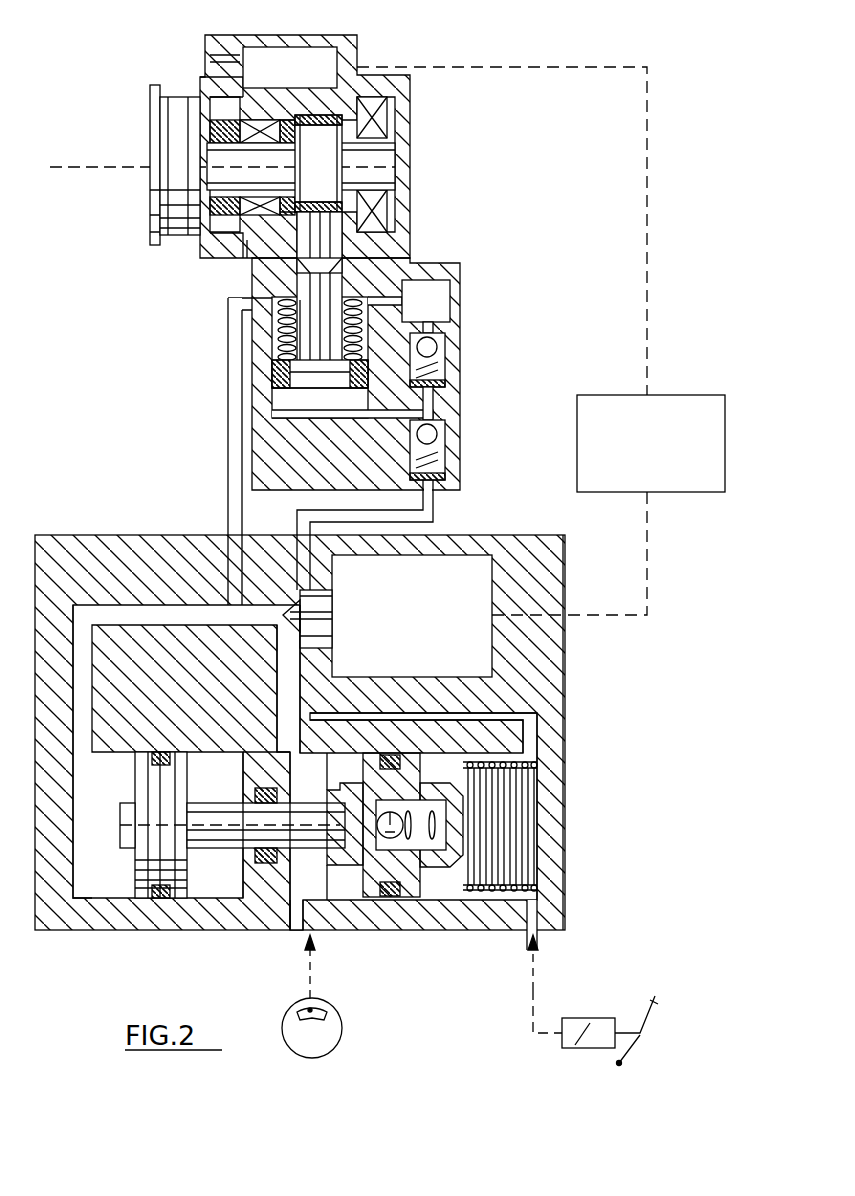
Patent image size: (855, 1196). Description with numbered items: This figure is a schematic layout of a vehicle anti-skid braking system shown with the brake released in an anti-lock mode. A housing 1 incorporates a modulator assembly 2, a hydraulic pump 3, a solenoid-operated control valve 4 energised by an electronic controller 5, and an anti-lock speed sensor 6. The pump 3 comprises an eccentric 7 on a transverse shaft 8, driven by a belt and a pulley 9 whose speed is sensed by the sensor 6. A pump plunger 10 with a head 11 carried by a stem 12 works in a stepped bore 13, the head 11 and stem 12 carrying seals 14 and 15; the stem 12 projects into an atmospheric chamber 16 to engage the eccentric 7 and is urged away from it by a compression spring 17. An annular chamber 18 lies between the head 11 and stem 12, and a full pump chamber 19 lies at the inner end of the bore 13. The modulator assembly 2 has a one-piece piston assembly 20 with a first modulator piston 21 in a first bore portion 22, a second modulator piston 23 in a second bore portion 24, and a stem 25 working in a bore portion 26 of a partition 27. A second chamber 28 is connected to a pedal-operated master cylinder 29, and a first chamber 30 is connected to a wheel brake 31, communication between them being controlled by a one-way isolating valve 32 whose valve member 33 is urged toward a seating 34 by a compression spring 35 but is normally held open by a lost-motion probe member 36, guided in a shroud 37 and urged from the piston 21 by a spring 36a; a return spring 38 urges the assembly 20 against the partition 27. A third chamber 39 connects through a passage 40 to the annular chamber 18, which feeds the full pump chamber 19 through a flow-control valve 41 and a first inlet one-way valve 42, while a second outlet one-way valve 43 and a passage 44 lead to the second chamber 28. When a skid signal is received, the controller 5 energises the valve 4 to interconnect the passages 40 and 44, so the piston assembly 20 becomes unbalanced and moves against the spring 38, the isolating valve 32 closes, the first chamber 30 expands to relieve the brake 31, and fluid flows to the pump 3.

The housing 1 is at (110, 560).
The modulator assembly 2 is at (288, 756).
The hydraulic pump 3 is at (270, 240).
The solenoid-operated control valve 4 is at (402, 630).
The electronic controller 5 is at (640, 460).
The anti-lock speed sensor 6 is at (268, 60).
The eccentric 7 is at (318, 118).
The transverse shaft 8 is at (372, 167).
The pulley 9 is at (175, 176).
The pump plunger 10 is at (322, 318).
The head 11 is at (288, 405).
The stem 12 is at (315, 252).
The stepped bore 13 is at (275, 258).
The seal 14 is at (272, 380).
The seal 15 is at (360, 275).
The atmospheric chamber 16 is at (372, 110).
The compression spring 17 is at (278, 330).
The annular chamber 18 is at (228, 300).
The full pump chamber 19 is at (290, 415).
The piston assembly 20 is at (158, 752).
The first modulator piston 21 is at (385, 758).
The first portion of the bore 22 is at (508, 716).
The second modulator piston 23 is at (150, 762).
The second portion of the bore 24 is at (198, 815).
The stem 25 is at (215, 818).
The bore portion 26 is at (256, 856).
The partition 27 is at (268, 892).
The second chamber 28 is at (483, 812).
The pedal-operated master cylinder 29 is at (583, 1033).
The first chamber 30 is at (300, 882).
The wheel brake 31 is at (322, 1018).
The one-way isolating valve 32 is at (397, 757).
The valve member 33 is at (392, 838).
The seating 34 is at (405, 838).
The compression spring 35 is at (432, 840).
The lost-motion probe member 36 is at (327, 790).
The spring 36a is at (325, 870).
The shroud 37 is at (348, 783).
The compression return spring 38 is at (560, 793).
The third chamber 39 is at (93, 875).
The passage 40 is at (234, 477).
The flow-control valve 41 is at (435, 302).
The first inlet one-way valve 42 is at (440, 343).
The second outlet one-way valve 43 is at (440, 430).
The passage 44 is at (478, 752).